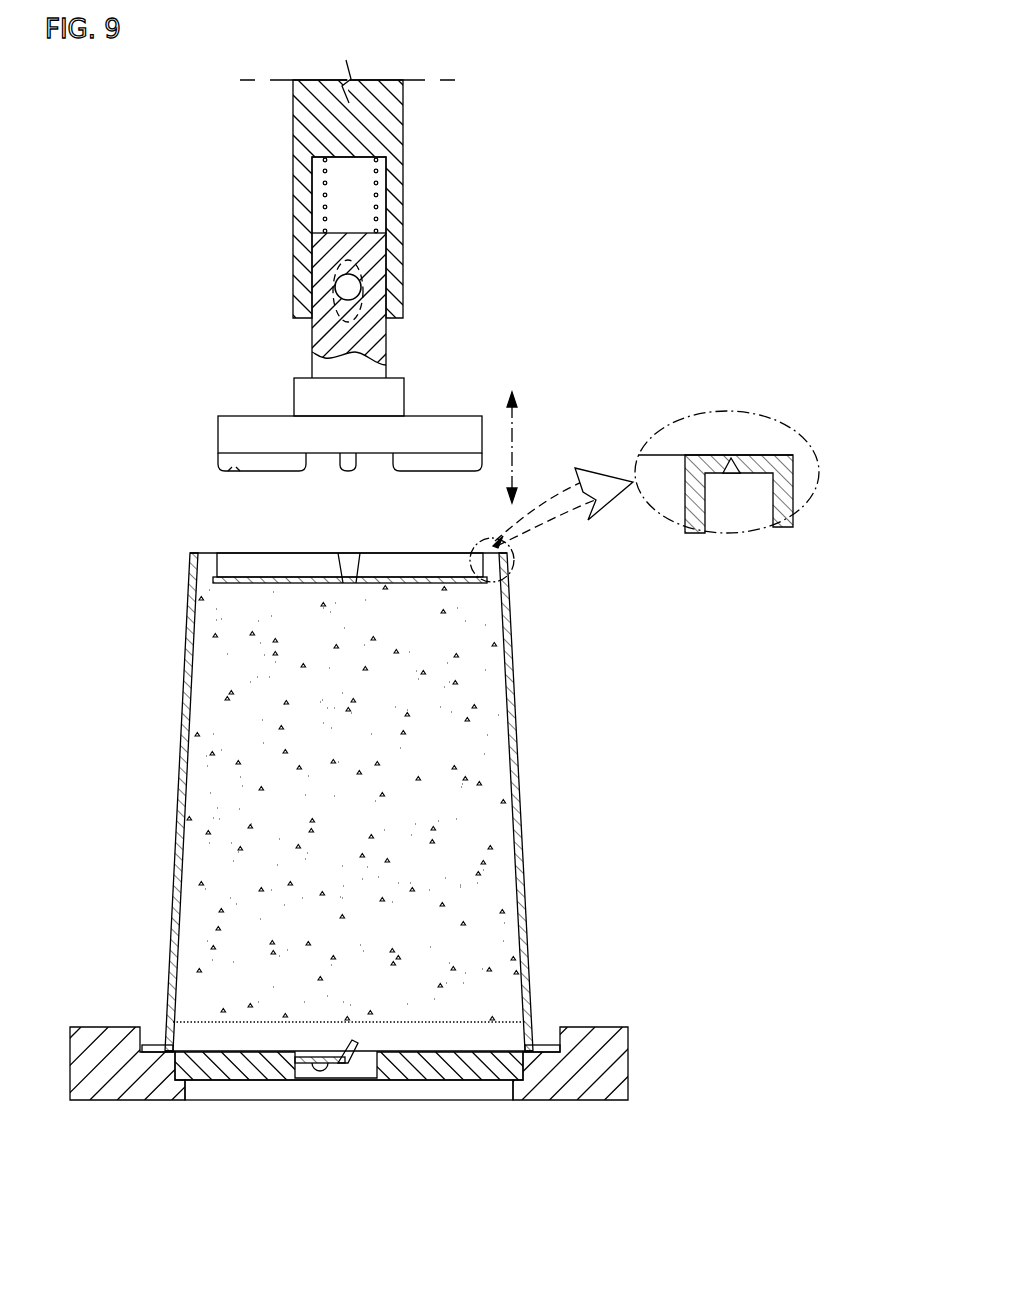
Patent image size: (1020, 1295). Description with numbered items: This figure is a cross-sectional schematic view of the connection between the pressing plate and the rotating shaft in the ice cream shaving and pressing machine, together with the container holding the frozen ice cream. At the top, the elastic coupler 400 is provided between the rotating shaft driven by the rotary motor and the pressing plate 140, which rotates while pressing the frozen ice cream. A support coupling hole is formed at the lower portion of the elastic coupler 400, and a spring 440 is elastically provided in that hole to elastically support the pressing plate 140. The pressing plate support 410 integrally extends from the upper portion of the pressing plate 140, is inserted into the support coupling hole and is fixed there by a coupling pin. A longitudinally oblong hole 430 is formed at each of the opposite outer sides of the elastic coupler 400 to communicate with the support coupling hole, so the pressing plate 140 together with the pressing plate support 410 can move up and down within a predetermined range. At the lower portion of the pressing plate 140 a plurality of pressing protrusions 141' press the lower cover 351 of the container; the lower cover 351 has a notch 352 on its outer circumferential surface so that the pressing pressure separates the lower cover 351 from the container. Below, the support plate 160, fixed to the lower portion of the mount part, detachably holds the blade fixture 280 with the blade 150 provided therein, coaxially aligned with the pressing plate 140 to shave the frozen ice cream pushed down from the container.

The elastic coupler 400 is at (390, 113).
The spring 440 is at (377, 173).
The pressing plate support 410 is at (313, 333).
The longitudinally oblong hole 430 is at (357, 322).
The pressing plate 140 is at (447, 428).
The pressing protrusions 141' is at (173, 477).
The lower cover 351 is at (263, 577).
The notch 352 is at (731, 462).
The support plate 160 is at (620, 1055).
The blade fixture 280 is at (462, 1068).
The blade 150 is at (358, 1048).